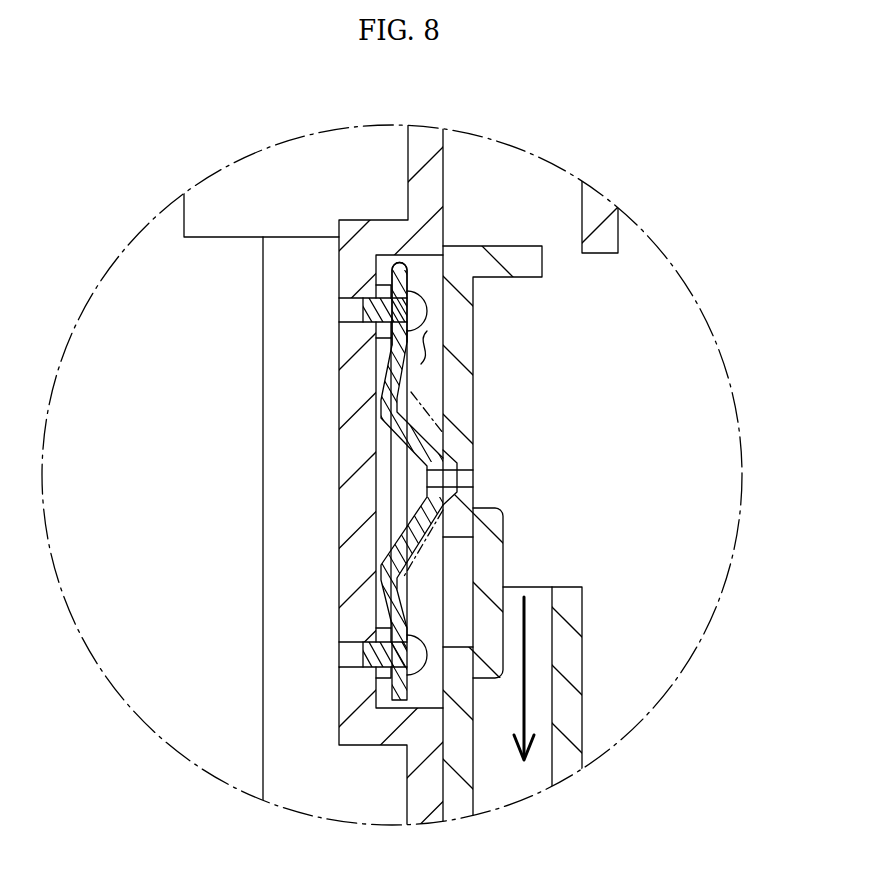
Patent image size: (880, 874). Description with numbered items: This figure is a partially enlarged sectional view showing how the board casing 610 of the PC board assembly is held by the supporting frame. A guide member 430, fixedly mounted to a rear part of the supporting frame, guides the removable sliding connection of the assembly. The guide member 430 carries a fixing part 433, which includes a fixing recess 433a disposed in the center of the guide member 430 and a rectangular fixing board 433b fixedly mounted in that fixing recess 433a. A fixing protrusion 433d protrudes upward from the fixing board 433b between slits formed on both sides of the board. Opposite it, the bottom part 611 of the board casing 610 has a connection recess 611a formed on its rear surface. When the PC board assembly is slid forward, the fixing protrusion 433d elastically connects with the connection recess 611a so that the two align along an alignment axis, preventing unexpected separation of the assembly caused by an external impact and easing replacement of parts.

The guide member 430 is at (353, 720).
The fixing part 433 is at (437, 390).
The fixing recess 433a is at (437, 343).
The fixing board 433b is at (392, 347).
The fixing protrusion 433d is at (437, 441).
The board casing 610 is at (573, 701).
The bottom part 611 is at (478, 768).
The connection recess 611a is at (480, 584).